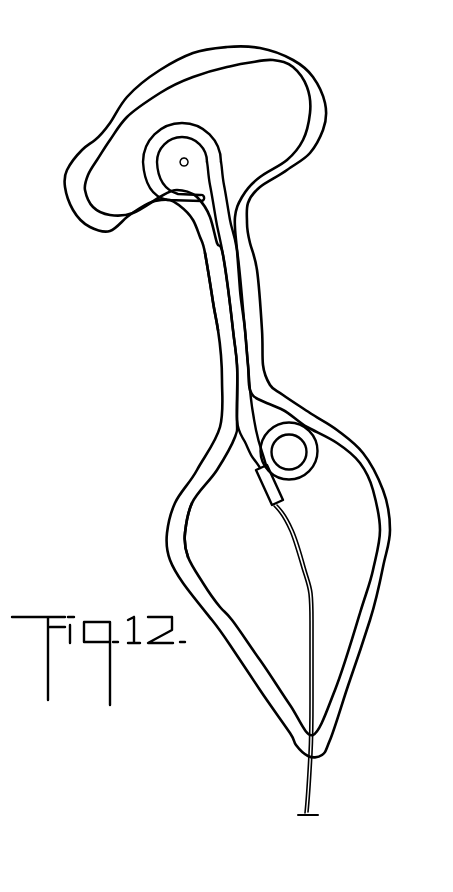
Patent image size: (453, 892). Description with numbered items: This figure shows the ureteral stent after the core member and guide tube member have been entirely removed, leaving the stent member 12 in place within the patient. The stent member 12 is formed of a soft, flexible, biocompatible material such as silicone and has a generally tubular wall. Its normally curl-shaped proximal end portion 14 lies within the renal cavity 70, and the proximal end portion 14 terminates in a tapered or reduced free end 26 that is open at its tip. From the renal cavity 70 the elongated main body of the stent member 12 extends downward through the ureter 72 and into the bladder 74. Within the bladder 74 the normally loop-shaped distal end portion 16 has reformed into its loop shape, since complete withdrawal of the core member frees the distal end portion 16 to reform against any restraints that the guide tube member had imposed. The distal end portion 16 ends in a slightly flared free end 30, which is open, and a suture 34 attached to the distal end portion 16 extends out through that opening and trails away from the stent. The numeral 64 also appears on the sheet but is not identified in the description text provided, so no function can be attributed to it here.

The stent member 12 is at (237, 270).
The proximal end portion 14 is at (207, 145).
The distal end portion 16 is at (305, 433).
The free end 26 is at (192, 192).
The free end 30 is at (275, 488).
The suture 34 is at (313, 588).
The catheter segment 64 is at (8, 520).
The renal cavity 70 is at (280, 135).
The ureter 72 is at (218, 302).
The bladder 74 is at (195, 523).